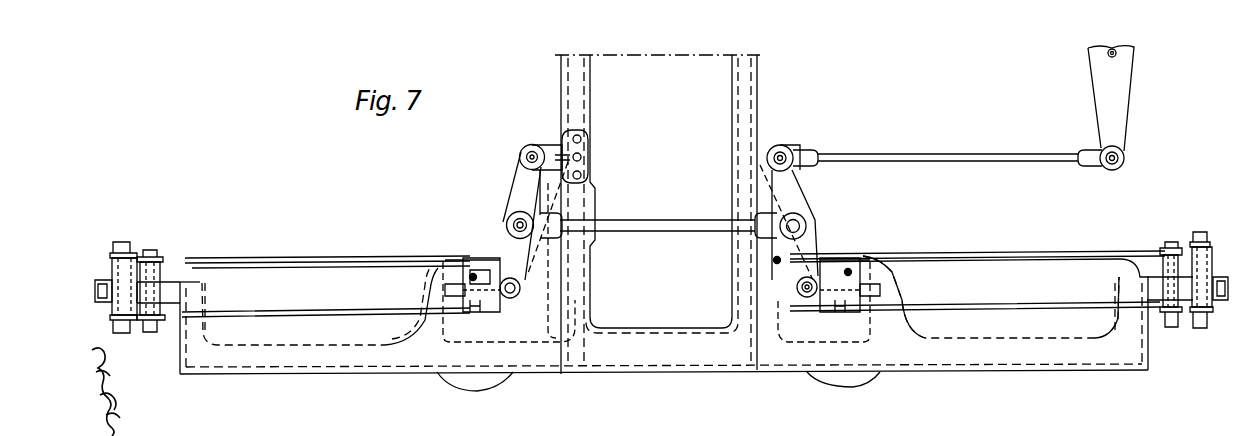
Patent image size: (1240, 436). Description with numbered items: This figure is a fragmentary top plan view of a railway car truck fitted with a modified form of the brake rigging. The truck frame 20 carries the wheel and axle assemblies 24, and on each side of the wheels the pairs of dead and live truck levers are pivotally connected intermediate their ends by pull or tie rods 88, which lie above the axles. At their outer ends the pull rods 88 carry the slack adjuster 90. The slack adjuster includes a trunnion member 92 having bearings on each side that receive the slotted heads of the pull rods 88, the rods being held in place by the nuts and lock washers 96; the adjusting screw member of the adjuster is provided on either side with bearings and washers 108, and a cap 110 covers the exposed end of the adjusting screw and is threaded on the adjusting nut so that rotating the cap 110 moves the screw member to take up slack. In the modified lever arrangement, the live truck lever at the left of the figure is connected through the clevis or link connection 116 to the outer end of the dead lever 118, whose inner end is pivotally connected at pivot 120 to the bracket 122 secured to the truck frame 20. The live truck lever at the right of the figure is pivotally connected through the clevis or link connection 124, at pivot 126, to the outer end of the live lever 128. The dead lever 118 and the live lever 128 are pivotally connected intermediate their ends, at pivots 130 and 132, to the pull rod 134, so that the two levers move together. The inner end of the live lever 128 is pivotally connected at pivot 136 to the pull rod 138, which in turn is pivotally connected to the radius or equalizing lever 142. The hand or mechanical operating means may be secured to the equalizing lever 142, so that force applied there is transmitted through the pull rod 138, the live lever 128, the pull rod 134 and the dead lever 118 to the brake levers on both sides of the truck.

The truck frame 20 is at (576, 73).
The wheel and axle assemblies 24 is at (340, 276).
The pull or tie rods 88 is at (276, 316).
The slack adjuster 90 is at (1229, 300).
The trunnion member 92 is at (112, 282).
The nuts and lock washers 96 is at (123, 241).
The washers 108 is at (156, 256).
The cap 110 is at (1112, 165).
The clevis or link connection 116 is at (498, 300).
The dead lever 118 is at (517, 188).
The pivotal connection 120 is at (532, 149).
The bracket 122 is at (584, 150).
The clevis or link connection 124 is at (818, 300).
The pivotal connection 126 is at (800, 298).
The live lever 128 is at (800, 197).
The pivotal connection 130 is at (507, 222).
The pivotal connection 132 is at (804, 226).
The pull rod 134 is at (659, 233).
The pivotal connection 136 is at (786, 149).
The pull rod 138 is at (963, 163).
The radius or equalizing lever 142 is at (1100, 104).